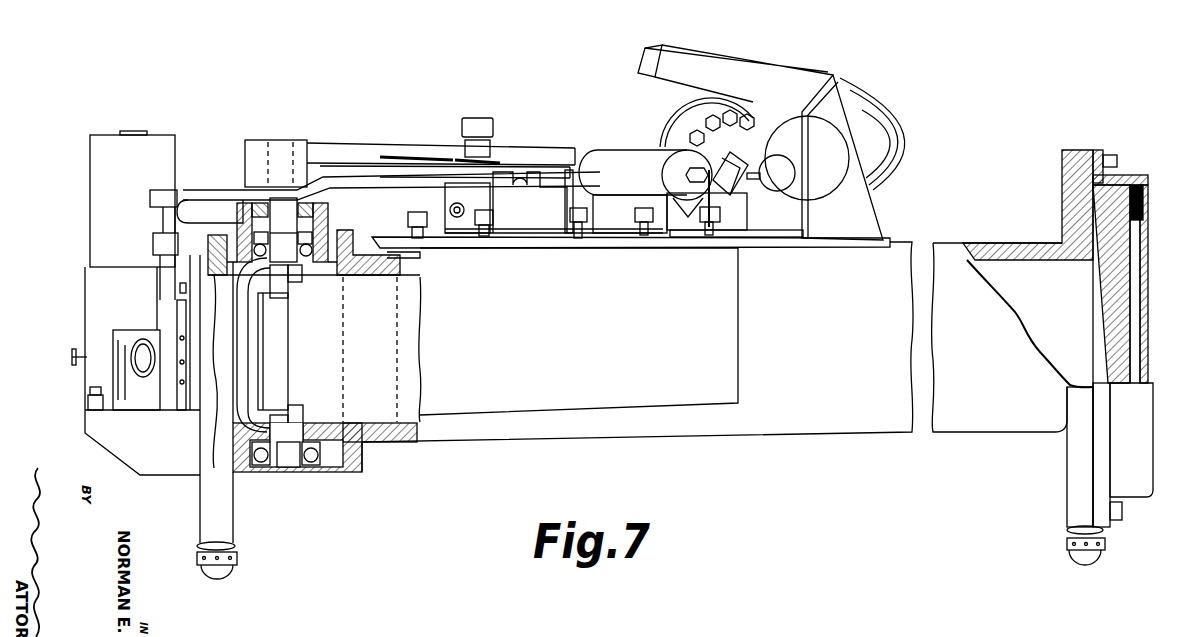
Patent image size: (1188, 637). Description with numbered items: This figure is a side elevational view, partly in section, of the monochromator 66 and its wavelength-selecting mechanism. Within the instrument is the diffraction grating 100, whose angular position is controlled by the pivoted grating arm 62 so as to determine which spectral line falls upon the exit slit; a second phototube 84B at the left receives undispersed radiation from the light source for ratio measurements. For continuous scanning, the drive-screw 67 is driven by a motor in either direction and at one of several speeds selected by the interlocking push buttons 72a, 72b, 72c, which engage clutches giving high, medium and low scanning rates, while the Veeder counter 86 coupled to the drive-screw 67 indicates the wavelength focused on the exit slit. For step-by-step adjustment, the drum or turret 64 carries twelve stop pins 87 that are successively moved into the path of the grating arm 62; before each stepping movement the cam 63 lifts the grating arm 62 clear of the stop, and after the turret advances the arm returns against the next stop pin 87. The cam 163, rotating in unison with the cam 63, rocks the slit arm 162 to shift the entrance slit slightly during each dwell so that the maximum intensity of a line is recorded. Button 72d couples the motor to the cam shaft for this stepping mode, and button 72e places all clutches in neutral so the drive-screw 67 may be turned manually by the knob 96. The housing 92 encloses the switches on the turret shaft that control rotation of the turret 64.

The second phototube 84B is at (100, 187).
The slit arm 162 is at (201, 191).
The grating arm 62 is at (383, 147).
The cam 163 is at (498, 167).
The cam 63 is at (525, 158).
The drive-screw 67 is at (585, 173).
The drum or turret 64 is at (668, 138).
The stop pins 87 is at (700, 112).
The knob 96 is at (789, 170).
The housing 92 is at (817, 190).
The Veeder counter 86 is at (747, 187).
The push button 72a is at (579, 224).
The push button 72b is at (643, 224).
The push button 72c is at (706, 226).
The push button 72d is at (488, 226).
The push button 72e is at (417, 228).
The diffraction grating 100 is at (282, 357).
The monochromator 66 is at (830, 352).